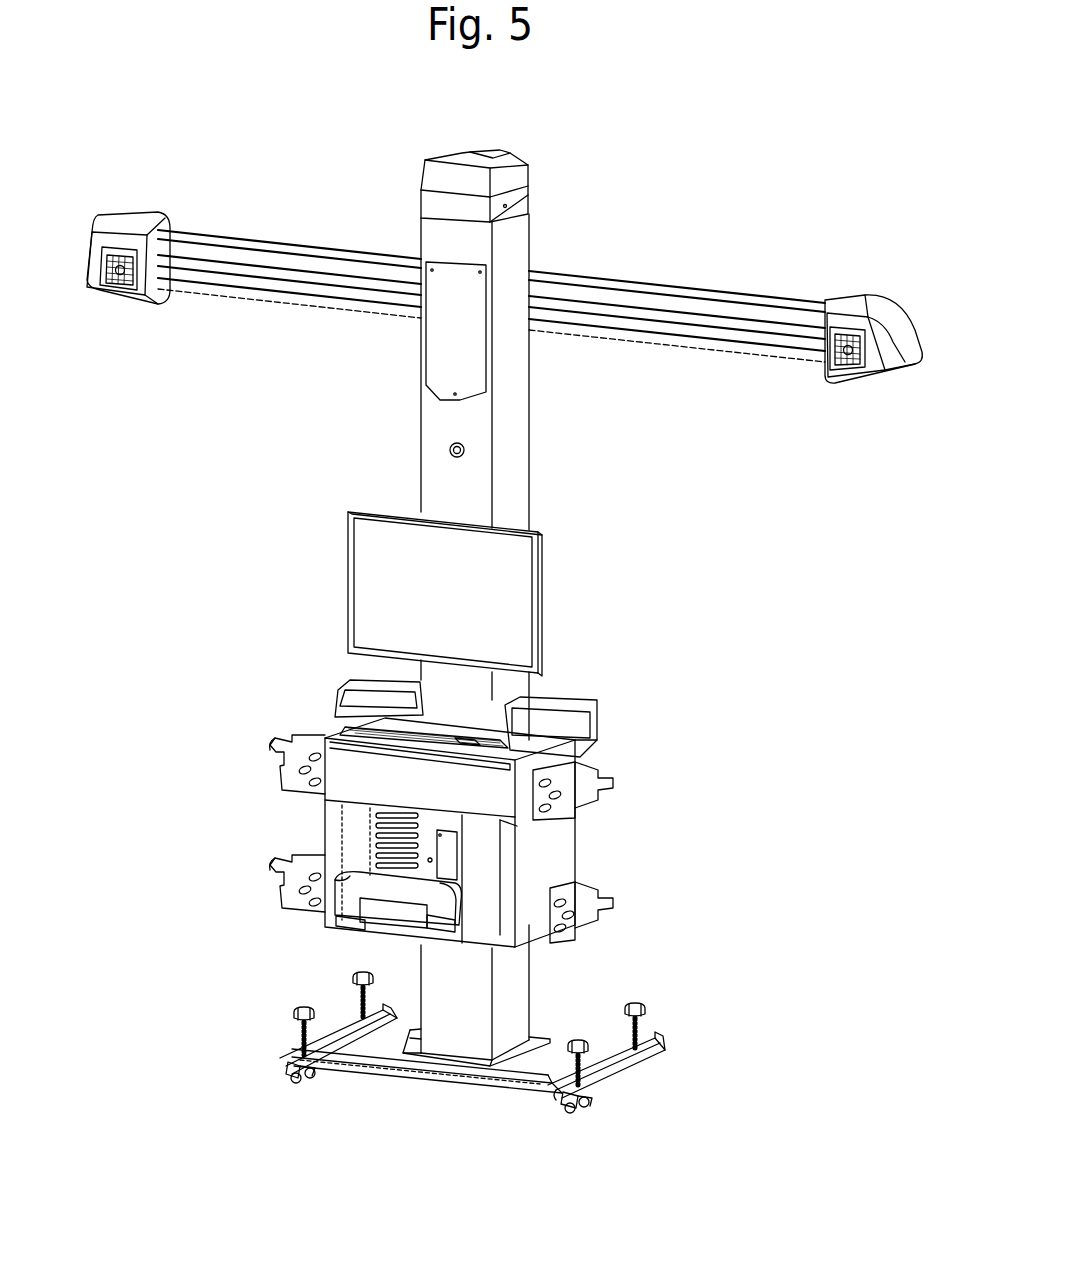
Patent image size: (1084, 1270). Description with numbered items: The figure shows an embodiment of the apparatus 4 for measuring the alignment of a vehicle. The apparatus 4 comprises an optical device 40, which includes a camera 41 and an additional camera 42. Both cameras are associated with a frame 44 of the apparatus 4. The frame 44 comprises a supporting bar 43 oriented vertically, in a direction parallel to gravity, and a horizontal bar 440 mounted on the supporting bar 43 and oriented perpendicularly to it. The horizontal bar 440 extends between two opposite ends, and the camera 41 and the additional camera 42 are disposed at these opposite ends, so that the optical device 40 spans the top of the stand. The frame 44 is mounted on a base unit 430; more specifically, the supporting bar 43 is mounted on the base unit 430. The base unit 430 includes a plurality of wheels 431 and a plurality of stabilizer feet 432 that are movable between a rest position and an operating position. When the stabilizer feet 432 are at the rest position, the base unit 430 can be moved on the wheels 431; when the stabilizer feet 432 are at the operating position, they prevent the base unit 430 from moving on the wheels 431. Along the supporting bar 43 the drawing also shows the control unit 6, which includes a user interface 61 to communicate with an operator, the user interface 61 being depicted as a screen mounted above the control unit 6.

The apparatus 4 is at (465, 575).
The optical device 40 is at (504, 281).
The camera 41 is at (110, 300).
The additional camera 42 is at (843, 384).
The supporting bar 43 is at (517, 474).
The frame 44 is at (445, 400).
The horizontal bar 440 is at (614, 340).
The control unit 6 is at (353, 764).
The user interface 61 is at (525, 606).
The base unit 430 is at (530, 1075).
The wheels 431 is at (562, 1110).
The stabilizer feet 432 is at (590, 1110).